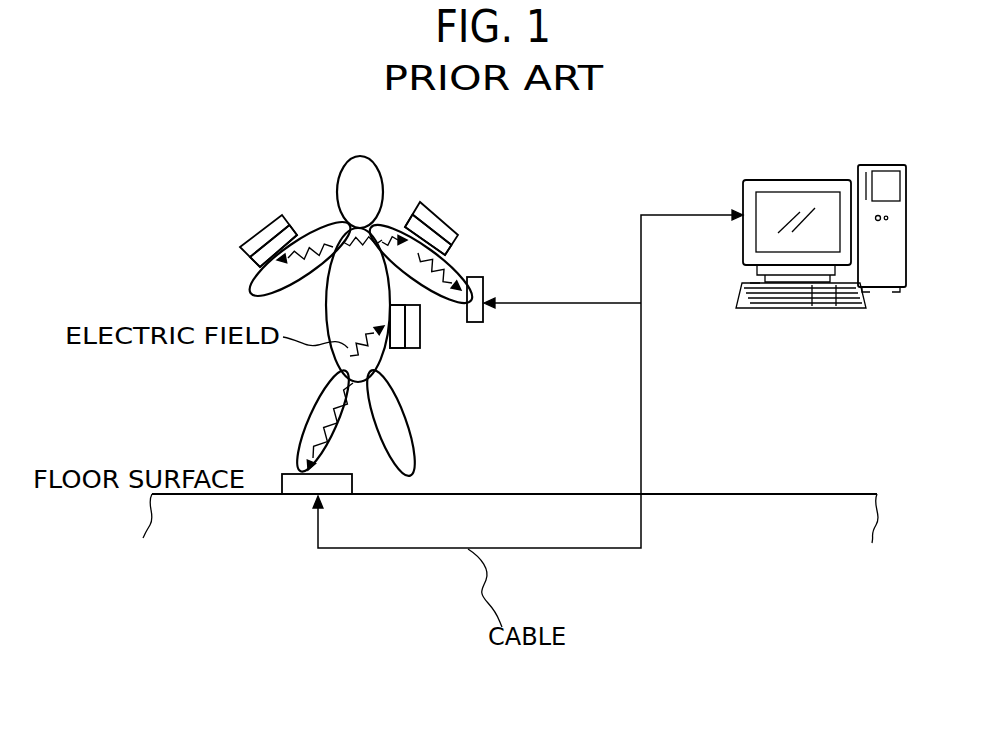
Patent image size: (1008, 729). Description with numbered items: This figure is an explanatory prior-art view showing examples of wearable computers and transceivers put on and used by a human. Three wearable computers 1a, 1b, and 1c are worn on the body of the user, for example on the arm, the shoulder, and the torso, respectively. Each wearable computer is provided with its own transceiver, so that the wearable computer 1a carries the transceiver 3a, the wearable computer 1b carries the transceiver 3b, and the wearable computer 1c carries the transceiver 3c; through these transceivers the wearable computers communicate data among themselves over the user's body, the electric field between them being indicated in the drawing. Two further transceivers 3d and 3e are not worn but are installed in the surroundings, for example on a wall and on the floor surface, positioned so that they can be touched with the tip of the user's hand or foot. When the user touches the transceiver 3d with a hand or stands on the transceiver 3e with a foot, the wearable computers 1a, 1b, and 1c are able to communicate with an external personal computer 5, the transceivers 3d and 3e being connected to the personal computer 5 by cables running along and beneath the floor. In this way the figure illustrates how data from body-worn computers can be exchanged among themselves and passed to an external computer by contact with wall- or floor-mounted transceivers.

The wearable computer 1a is at (262, 233).
The wearable computer 1b is at (432, 212).
The wearable computer 1c is at (424, 325).
The transceiver 3a is at (260, 265).
The transceiver 3b is at (455, 240).
The transceiver 3c is at (400, 350).
The transceiver 3d is at (482, 324).
The transceiver 3e is at (282, 476).
The external personal computer 5 is at (797, 322).